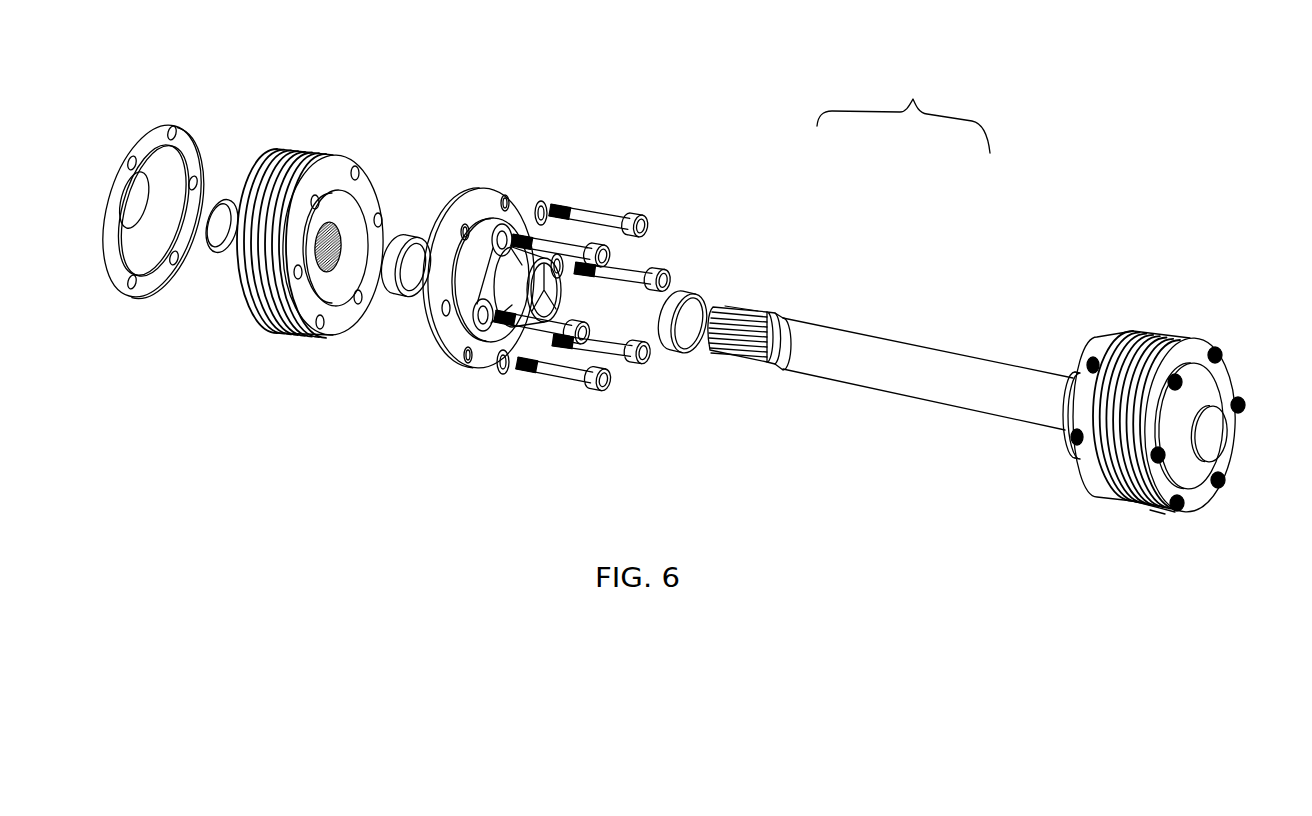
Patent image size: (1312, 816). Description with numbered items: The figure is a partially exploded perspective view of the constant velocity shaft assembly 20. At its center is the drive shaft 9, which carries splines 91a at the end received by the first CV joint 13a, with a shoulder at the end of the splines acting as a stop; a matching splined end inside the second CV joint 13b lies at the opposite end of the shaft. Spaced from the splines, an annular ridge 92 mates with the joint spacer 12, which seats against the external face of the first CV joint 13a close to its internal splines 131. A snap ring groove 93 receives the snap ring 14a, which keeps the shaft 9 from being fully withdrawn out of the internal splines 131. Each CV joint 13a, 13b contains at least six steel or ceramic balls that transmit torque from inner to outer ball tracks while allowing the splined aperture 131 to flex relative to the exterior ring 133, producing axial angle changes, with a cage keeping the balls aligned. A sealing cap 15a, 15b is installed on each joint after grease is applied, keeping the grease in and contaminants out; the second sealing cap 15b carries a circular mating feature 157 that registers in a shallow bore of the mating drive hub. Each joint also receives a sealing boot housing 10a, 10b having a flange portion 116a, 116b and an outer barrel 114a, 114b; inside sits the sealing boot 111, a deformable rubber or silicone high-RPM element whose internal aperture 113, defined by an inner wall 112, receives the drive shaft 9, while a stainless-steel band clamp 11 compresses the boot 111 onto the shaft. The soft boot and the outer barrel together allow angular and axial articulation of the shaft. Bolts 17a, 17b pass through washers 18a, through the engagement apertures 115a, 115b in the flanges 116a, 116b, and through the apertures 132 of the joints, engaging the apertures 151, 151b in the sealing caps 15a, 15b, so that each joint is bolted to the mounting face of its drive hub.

The drive shaft 9 is at (890, 318).
The sealing boot housing 10a is at (504, 296).
The sealing boot housing 10b is at (1106, 416).
The band clamp 11 is at (694, 291).
The joint spacer 12 is at (405, 234).
The first CV joint 13a is at (298, 255).
The second CV joint 13b is at (1158, 333).
The snap ring 14a is at (223, 199).
The sealing cap 15a is at (153, 208).
The sealing cap 15b is at (1214, 434).
The bolts 17a is at (605, 223).
The bolts 17b is at (1071, 442).
The washers 18a is at (541, 201).
The constant velocity shaft assembly 20 is at (913, 99).
The splines 91a is at (740, 364).
The annular ridge 92 is at (785, 318).
The snap ring groove 93 is at (717, 313).
The sealing boot 111 is at (520, 320).
The inner wall 112 is at (562, 300).
The internal aperture 113 is at (542, 304).
The outer barrel 114a is at (458, 290).
The outer barrel 114b is at (1090, 380).
The engagement features 115a is at (468, 363).
The apertures 115b is at (1200, 352).
The flange portion 116a is at (452, 344).
The flange portion 116b is at (1066, 413).
The internal splines 131 is at (338, 258).
The apertures 132 is at (320, 329).
The exterior ring 133 is at (270, 325).
The apertures 151 is at (134, 288).
The end cap rim 151b is at (1157, 514).
The mating feature 157 is at (1198, 494).